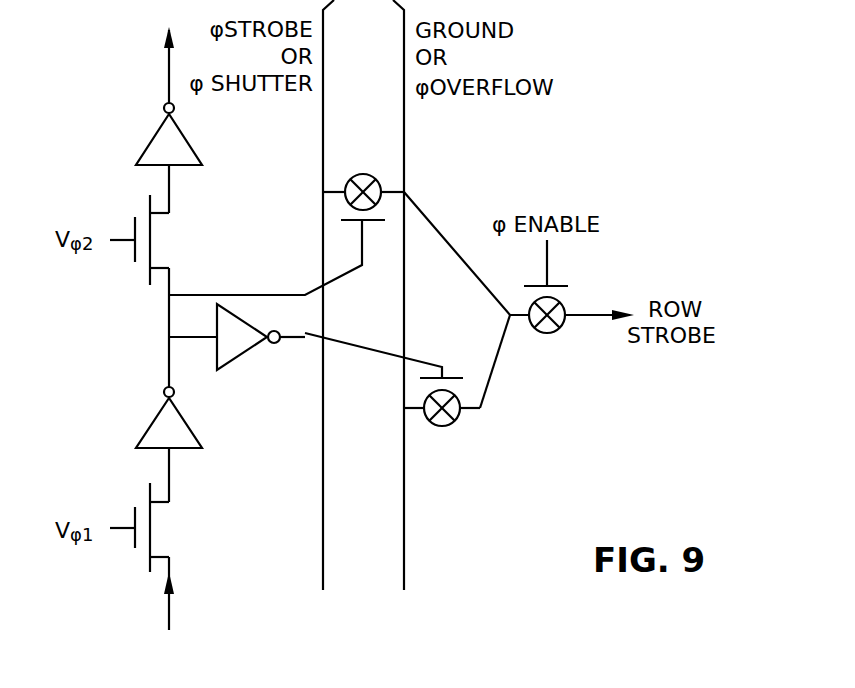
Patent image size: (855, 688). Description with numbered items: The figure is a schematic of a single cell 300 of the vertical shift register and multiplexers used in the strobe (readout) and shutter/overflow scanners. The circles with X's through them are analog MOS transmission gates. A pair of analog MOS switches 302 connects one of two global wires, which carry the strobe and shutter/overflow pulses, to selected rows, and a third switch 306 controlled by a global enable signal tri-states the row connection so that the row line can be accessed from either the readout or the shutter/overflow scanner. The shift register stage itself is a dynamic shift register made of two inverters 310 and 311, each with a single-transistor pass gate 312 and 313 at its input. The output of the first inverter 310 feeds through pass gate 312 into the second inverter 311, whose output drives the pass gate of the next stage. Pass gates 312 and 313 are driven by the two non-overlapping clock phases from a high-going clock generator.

The single cell 300 is at (378, 662).
The analog MOS switches 302 is at (365, 172).
The third switch 306 is at (555, 334).
The first inverter 310 is at (150, 424).
The second inverter 311 is at (150, 146).
The single-transistor pass gate 312 is at (152, 240).
The single-transistor pass gate 313 is at (152, 530).